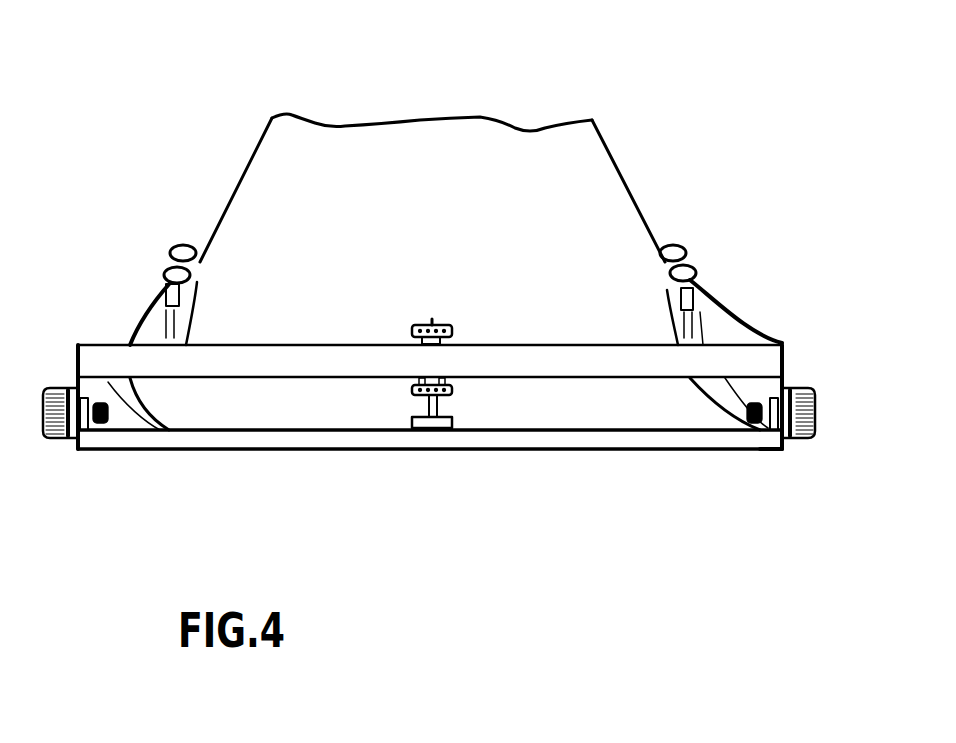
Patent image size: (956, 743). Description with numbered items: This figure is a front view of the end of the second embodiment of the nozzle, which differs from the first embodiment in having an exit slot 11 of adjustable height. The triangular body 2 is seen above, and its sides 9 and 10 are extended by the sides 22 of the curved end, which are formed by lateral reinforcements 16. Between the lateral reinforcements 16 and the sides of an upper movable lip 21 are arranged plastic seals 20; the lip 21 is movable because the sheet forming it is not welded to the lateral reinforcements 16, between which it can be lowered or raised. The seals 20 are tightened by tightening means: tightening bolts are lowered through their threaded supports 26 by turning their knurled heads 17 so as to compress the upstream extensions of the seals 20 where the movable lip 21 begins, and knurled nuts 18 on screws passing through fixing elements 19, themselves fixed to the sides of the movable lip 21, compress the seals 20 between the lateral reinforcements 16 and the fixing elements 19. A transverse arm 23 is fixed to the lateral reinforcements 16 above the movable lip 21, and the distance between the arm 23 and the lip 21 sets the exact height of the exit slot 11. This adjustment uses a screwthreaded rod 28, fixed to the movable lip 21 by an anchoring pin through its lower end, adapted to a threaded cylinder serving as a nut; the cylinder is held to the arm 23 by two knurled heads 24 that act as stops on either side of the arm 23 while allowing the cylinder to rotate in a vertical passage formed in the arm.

The triangular body 2 is at (453, 142).
The side of the triangular body 9 is at (617, 163).
The side of the triangular body 10 is at (252, 163).
The exit slot 11 is at (415, 437).
The lateral reinforcements 16 is at (745, 318).
The knurled heads 17 is at (672, 250).
The knurled nuts 18 is at (793, 385).
The fixing elements 19 is at (733, 398).
The seals 20 is at (707, 303).
The upper movable lip 21 is at (353, 427).
The sides of the curved end 22 is at (783, 437).
The transverse arm 23 is at (288, 358).
The knurled heads 24 is at (455, 330).
The threaded supports 26 is at (697, 280).
The screwthreaded rod 28 is at (432, 320).